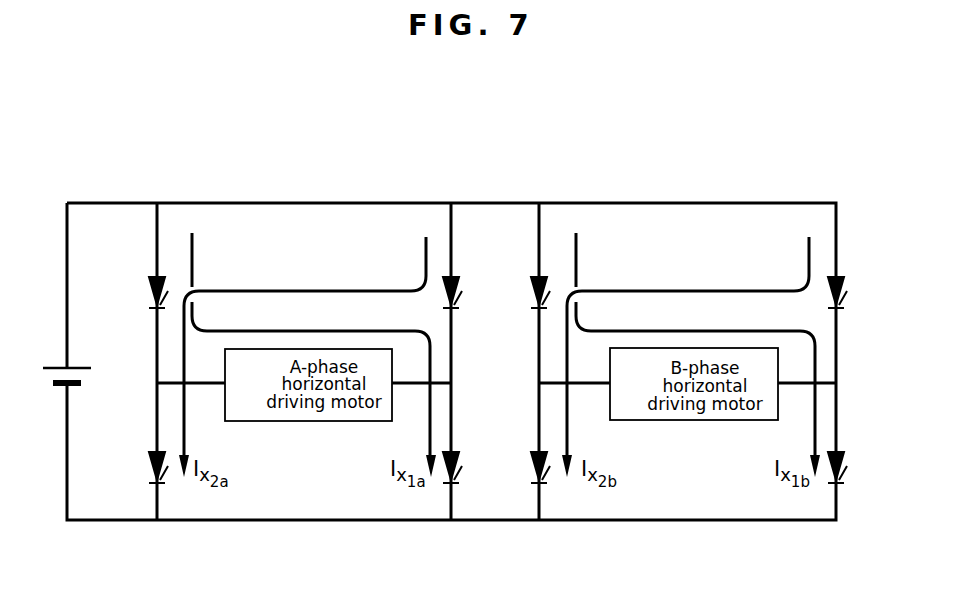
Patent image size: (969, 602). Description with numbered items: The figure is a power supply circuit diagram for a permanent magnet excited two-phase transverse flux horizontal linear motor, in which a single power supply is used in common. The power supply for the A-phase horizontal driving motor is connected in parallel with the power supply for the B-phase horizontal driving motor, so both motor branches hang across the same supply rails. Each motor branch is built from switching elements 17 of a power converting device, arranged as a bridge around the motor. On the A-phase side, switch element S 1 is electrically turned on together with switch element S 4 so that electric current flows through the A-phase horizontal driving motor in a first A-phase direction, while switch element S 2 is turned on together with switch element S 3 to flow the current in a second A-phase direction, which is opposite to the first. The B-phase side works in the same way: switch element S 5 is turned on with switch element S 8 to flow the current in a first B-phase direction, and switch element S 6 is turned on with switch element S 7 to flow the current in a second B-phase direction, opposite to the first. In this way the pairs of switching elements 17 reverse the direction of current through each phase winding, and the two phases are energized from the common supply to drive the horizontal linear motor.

The power converting device elements 17 is at (496, 209).
The element S1 of power converting device 1 is at (144, 293).
The element S2 of power converting device 2 is at (144, 468).
The element S3 of power converting device 3 is at (466, 293).
The element S4 of power converting device 4 is at (466, 468).
The element S5 of power converting device 5 is at (527, 293).
The element S6 of power converting device 6 is at (527, 468).
The element S7 of power converting device 7 is at (852, 293).
The element S8 of power converting device 8 is at (852, 468).